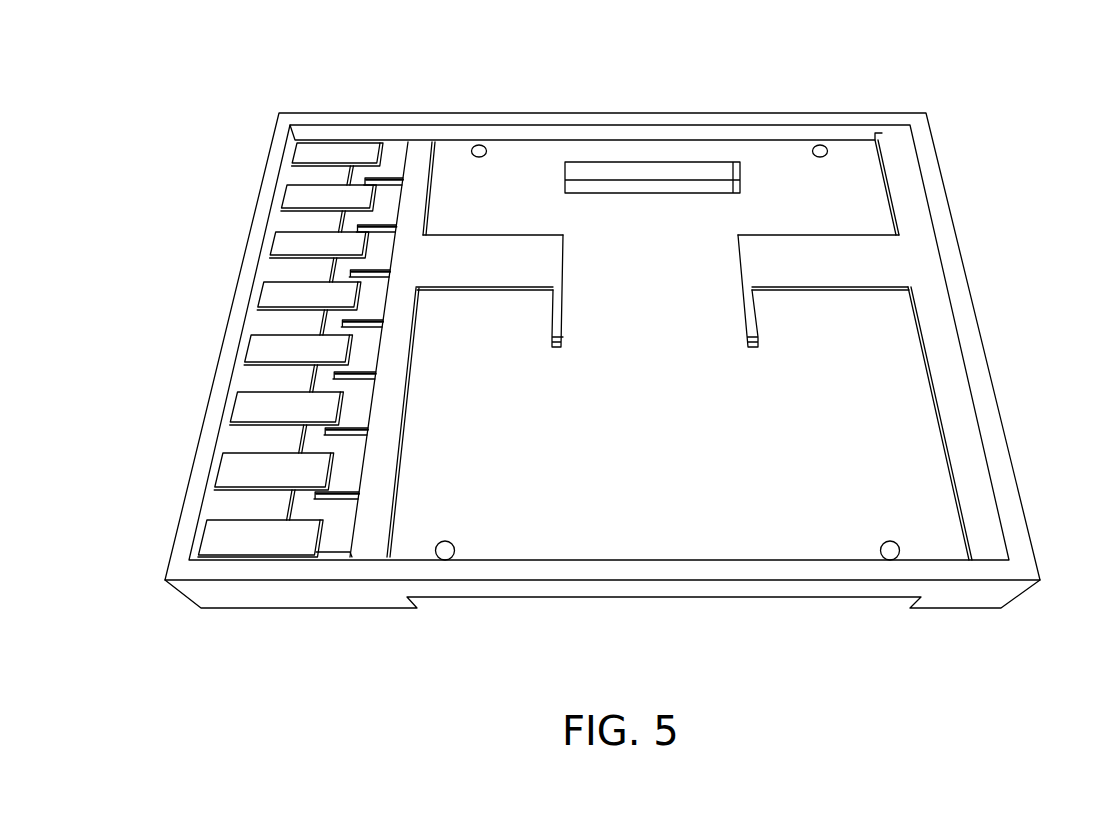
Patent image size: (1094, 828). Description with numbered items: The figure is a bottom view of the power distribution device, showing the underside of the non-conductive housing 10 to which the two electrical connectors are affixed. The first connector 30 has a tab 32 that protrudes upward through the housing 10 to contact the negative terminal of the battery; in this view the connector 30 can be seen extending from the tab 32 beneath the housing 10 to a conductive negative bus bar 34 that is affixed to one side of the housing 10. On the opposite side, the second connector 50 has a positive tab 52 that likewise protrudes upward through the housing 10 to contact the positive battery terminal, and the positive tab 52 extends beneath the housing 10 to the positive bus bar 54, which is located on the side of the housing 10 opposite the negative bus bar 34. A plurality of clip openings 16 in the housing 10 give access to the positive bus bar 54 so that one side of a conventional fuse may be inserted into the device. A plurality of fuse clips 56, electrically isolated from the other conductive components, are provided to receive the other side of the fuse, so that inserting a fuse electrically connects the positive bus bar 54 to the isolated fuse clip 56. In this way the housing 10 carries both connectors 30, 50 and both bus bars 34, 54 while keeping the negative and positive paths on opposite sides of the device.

The housing 10 is at (613, 465).
The clip openings 16 is at (347, 323).
The first connector 30 is at (828, 242).
The tab 32 is at (762, 272).
The negative bus bar 34 is at (947, 335).
The second connector 50 is at (475, 253).
The positive tab 52 is at (558, 334).
The positive bus bar 54 is at (378, 435).
The fuse clips 56 is at (283, 242).